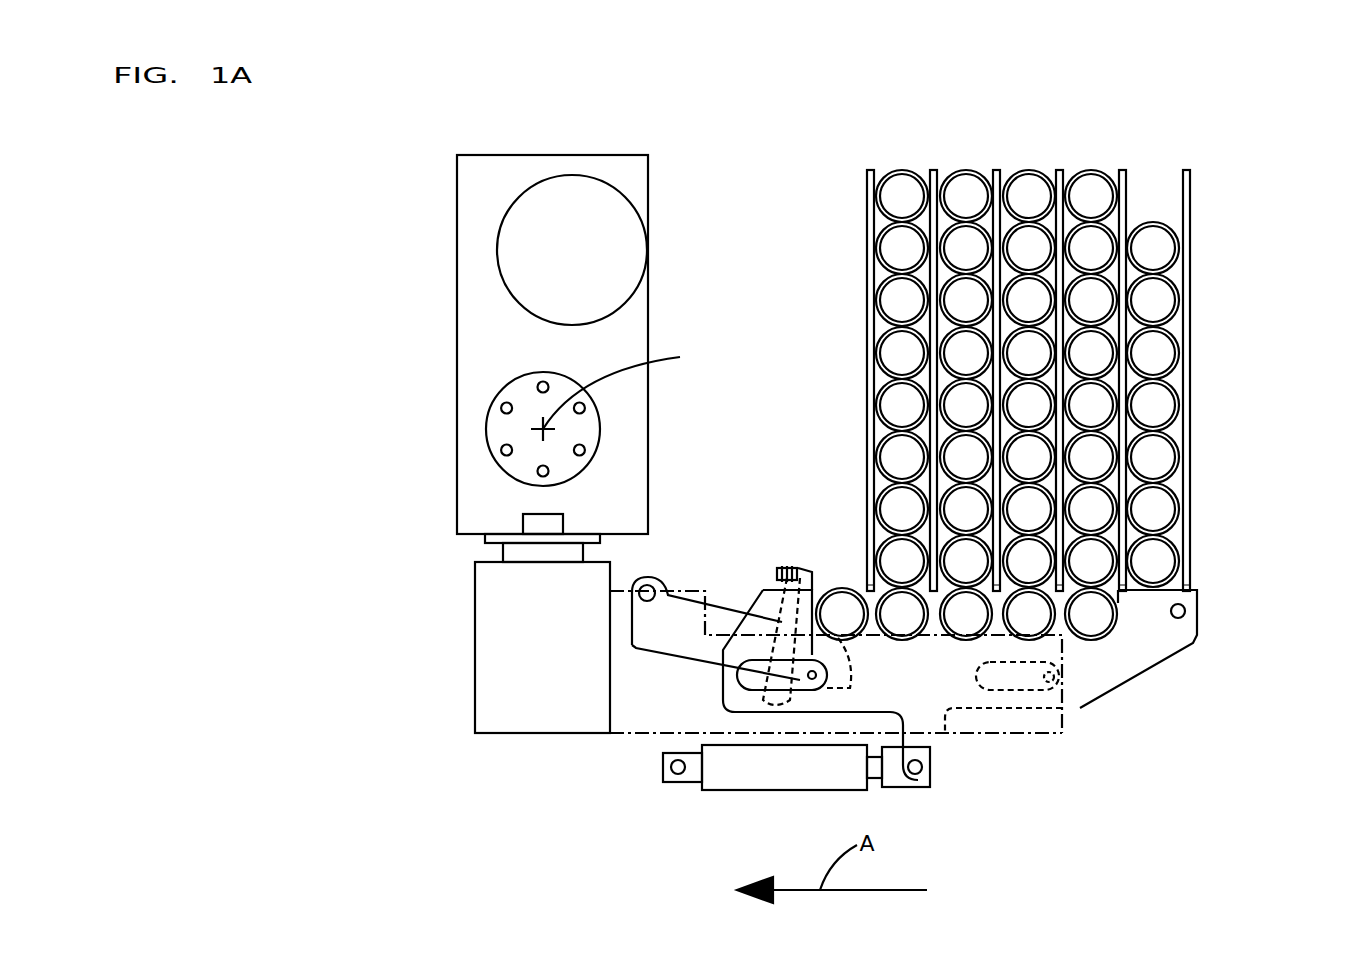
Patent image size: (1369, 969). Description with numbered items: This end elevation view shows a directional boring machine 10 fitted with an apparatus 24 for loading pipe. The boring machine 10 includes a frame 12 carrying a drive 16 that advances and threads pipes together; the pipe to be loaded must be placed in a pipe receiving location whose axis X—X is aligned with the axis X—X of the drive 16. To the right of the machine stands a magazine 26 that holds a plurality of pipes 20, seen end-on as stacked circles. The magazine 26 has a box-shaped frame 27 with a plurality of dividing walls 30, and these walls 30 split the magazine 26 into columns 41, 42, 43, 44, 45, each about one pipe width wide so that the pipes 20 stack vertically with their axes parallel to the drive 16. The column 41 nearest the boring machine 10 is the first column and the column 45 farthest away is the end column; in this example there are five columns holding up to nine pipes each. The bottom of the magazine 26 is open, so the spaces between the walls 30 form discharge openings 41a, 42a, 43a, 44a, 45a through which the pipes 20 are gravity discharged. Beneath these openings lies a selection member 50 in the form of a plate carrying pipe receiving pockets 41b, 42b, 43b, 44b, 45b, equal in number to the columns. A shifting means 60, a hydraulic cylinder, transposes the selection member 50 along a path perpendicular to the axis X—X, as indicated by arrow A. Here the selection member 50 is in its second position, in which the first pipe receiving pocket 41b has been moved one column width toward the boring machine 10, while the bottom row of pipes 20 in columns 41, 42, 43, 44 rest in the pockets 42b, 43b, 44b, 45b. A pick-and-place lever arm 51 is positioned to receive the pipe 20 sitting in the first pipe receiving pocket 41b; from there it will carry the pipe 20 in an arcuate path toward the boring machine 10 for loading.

The boring machine 10 is at (395, 430).
The frame 12 is at (465, 610).
The drive 16 is at (478, 448).
The pipes 20 is at (1158, 406).
The apparatus for loading pipe 24 is at (1250, 342).
The magazine 26 is at (1203, 477).
The box-shaped frame 27 is at (1186, 273).
The dividing walls 30 is at (1060, 170).
The first column 41 is at (883, 170).
The column 42 is at (940, 170).
The column 43 is at (1008, 170).
The column 44 is at (1073, 170).
The end column 45 is at (1146, 185).
The discharge opening 41a is at (873, 587).
The discharge opening 42a is at (990, 592).
The discharge opening 43a is at (1097, 597).
The discharge opening 44a is at (1117, 600).
The discharge opening 45a is at (1178, 583).
The first pipe receiving pocket 41b is at (830, 637).
The pipe receiving pocket 42b is at (903, 640).
The pipe receiving pocket 43b is at (962, 637).
The pipe receiving pocket 44b is at (1040, 637).
The pipe receiving pocket 45b is at (1110, 620).
The selection member 50 is at (1195, 647).
The pick-and-place lever arm 51 is at (723, 610).
The shifting means 60 is at (793, 792).